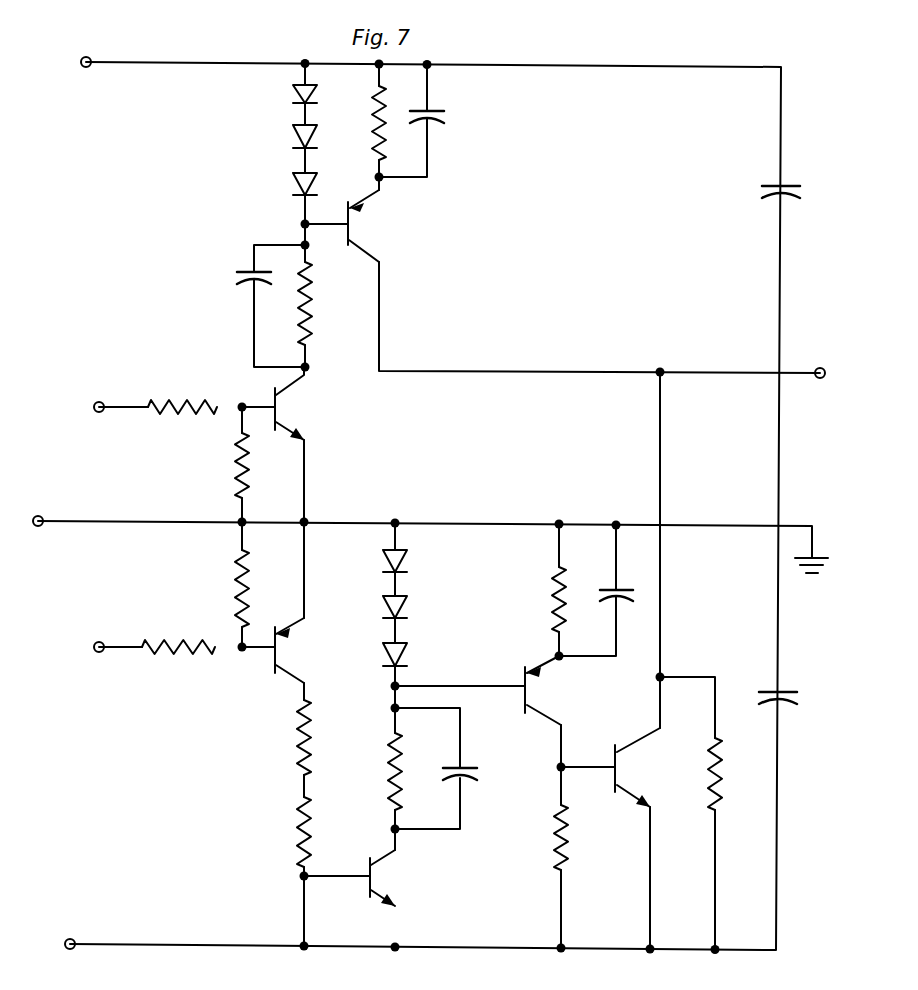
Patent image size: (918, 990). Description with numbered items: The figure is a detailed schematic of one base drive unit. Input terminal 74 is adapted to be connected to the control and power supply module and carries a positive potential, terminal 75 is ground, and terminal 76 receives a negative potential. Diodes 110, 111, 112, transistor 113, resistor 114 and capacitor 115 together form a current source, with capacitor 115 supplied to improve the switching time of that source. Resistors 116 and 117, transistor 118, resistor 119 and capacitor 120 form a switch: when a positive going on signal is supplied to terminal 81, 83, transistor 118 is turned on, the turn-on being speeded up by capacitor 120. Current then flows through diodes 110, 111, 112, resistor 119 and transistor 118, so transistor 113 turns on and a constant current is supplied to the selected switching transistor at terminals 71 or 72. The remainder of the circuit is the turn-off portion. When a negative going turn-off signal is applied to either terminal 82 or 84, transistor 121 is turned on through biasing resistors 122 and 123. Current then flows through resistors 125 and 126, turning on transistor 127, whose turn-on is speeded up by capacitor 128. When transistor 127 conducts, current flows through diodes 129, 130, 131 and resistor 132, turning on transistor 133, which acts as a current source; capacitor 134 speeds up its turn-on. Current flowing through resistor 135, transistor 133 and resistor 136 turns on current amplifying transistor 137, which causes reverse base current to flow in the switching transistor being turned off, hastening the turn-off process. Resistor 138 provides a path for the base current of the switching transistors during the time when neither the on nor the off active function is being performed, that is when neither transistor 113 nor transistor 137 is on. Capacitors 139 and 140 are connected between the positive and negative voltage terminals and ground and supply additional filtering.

The input terminal 74 is at (84, 68).
The terminal 75 is at (38, 527).
The terminal 76 is at (67, 940).
The terminal 71 is at (830, 354).
The terminal 72 is at (830, 355).
The terminal 83 is at (115, 435).
The terminal 81 is at (100, 413).
The terminal 84 is at (86, 674).
The terminal 82 is at (99, 653).
The diode 110 is at (294, 92).
The diode 111 is at (294, 137).
The diode 112 is at (294, 185).
The transistor 113 is at (356, 210).
The resistor 114 is at (368, 124).
The capacitor 115 is at (447, 118).
The resistor 116 is at (192, 398).
The resistor 117 is at (250, 462).
The transistor 118 is at (282, 408).
The resistor 119 is at (312, 304).
The capacitor 120 is at (250, 270).
The transistor 121 is at (286, 658).
The biasing resistor 122 is at (186, 638).
The biasing resistor 123 is at (236, 592).
The resistor 125 is at (298, 732).
The resistor 126 is at (347, 823).
The transistor 127 is at (378, 876).
The capacitor 128 is at (468, 770).
The diode 129 is at (384, 562).
The diode 130 is at (384, 608).
The diode 131 is at (384, 655).
The resistor 132 is at (386, 777).
The transistor 133 is at (532, 680).
The capacitor 134 is at (622, 598).
The resistor 135 is at (550, 598).
The resistor 136 is at (558, 850).
The current amplifying transistor 137 is at (622, 779).
The resistor 138 is at (720, 790).
The capacitor 139 is at (790, 196).
The capacitor 140 is at (784, 702).